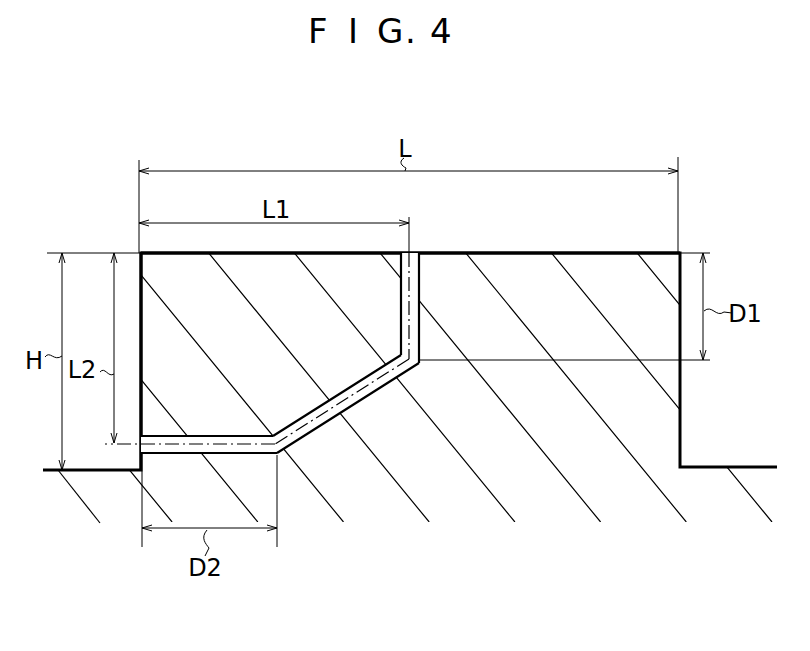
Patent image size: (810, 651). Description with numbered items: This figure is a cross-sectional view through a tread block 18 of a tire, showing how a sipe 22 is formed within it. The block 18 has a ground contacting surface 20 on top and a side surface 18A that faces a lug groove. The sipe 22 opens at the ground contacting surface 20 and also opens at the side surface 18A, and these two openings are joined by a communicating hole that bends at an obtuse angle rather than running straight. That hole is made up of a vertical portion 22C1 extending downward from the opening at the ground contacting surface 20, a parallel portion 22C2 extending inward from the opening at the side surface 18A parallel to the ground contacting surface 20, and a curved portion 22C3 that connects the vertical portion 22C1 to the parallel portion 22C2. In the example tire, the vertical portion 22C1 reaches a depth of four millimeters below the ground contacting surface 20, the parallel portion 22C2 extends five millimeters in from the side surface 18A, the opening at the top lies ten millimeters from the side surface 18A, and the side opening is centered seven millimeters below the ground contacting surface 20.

The block 18 is at (621, 252).
The side surface 18A is at (140, 268).
The ground contacting surface 20 is at (569, 253).
The sipe 22 is at (286, 386).
The vertical portion 22C1 is at (418, 290).
The parallel portion 22C2 is at (178, 455).
The curved portion 22C3 is at (370, 397).